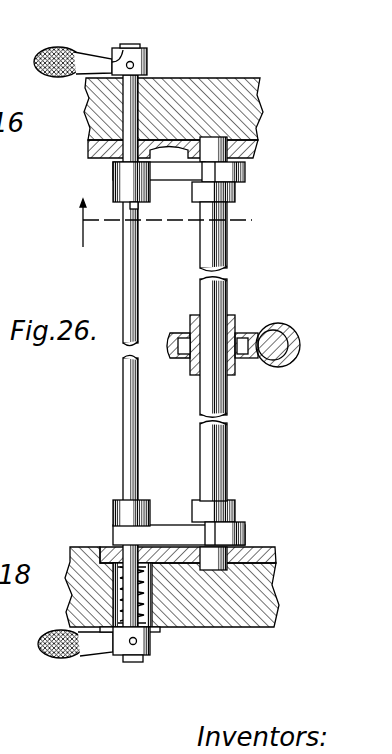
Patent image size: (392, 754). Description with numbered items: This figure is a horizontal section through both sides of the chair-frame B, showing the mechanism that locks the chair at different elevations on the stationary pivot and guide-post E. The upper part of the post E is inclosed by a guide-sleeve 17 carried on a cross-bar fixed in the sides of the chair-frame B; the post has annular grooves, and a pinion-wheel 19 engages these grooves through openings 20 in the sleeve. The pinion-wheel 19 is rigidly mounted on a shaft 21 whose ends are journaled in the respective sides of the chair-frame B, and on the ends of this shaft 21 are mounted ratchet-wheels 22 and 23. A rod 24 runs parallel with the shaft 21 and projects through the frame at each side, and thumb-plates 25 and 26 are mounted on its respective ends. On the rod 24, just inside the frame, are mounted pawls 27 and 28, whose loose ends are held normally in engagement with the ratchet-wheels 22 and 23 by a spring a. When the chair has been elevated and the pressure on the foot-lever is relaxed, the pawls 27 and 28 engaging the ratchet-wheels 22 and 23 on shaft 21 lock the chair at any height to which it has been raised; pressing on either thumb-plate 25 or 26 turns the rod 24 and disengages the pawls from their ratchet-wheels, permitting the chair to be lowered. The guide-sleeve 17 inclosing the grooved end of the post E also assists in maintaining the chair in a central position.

The guide-sleeve 17 is at (292, 362).
The pinion-wheel 19 is at (203, 365).
The openings 20 is at (254, 358).
The shaft 21 is at (210, 246).
The ratchet-wheel 22 is at (224, 172).
The ratchet-wheel 23 is at (226, 533).
The rod 24 is at (127, 268).
The thumb-plate 25 is at (126, 58).
The thumb-plate 26 is at (90, 654).
The pawl 27 is at (178, 172).
The pawl 28 is at (163, 543).
The chair-frame B is at (185, 352).
The stationary pivot and guide-post E is at (300, 345).
The spring a is at (171, 642).